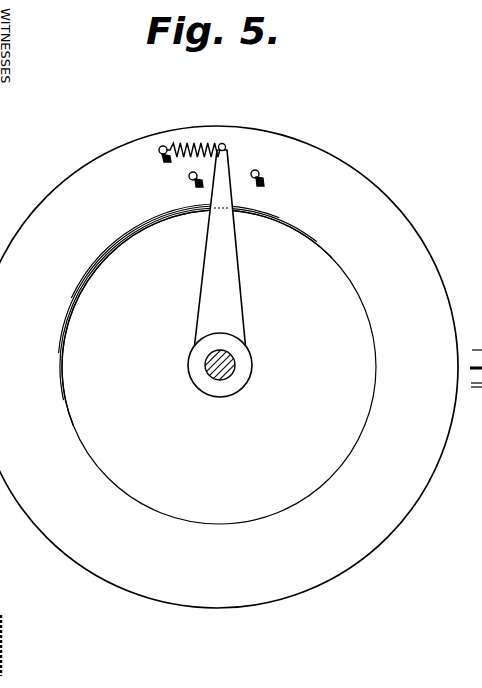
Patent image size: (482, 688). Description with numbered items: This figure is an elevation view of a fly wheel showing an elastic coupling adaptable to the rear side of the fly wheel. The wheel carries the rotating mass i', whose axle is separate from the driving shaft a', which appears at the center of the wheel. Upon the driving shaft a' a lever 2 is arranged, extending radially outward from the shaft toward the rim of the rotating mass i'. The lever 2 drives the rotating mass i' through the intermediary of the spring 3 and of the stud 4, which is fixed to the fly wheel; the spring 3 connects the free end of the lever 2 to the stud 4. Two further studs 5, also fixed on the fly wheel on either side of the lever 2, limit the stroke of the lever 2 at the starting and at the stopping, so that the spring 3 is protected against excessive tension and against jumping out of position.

The lever 2 is at (235, 280).
The spring 3 is at (195, 145).
The stud 4 is at (164, 147).
The studs 5 is at (191, 180).
The driving shaft a' is at (220, 381).
The rotating mass i' is at (229, 367).